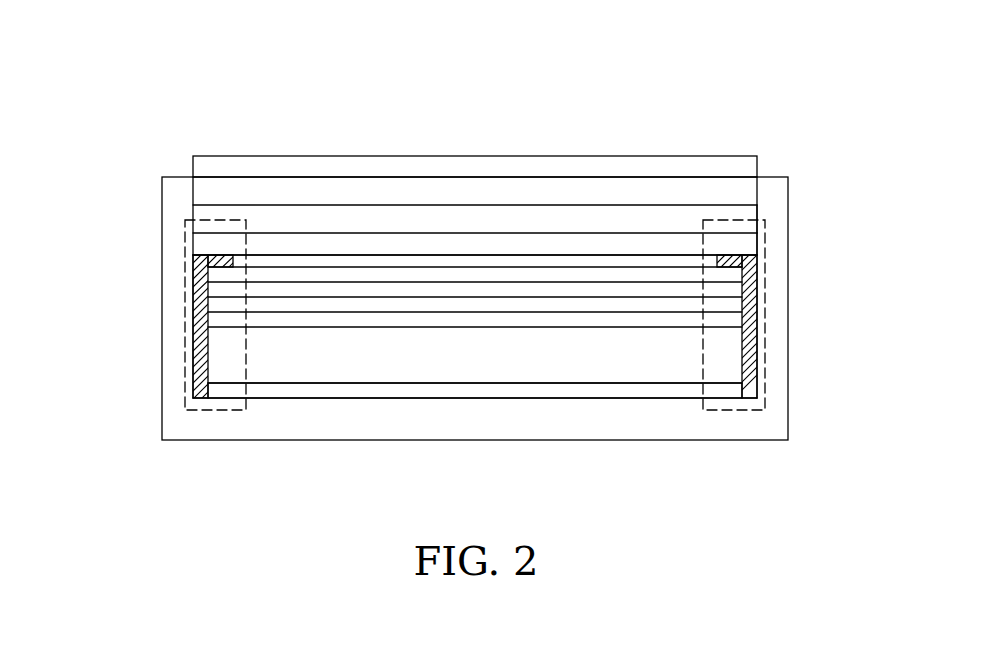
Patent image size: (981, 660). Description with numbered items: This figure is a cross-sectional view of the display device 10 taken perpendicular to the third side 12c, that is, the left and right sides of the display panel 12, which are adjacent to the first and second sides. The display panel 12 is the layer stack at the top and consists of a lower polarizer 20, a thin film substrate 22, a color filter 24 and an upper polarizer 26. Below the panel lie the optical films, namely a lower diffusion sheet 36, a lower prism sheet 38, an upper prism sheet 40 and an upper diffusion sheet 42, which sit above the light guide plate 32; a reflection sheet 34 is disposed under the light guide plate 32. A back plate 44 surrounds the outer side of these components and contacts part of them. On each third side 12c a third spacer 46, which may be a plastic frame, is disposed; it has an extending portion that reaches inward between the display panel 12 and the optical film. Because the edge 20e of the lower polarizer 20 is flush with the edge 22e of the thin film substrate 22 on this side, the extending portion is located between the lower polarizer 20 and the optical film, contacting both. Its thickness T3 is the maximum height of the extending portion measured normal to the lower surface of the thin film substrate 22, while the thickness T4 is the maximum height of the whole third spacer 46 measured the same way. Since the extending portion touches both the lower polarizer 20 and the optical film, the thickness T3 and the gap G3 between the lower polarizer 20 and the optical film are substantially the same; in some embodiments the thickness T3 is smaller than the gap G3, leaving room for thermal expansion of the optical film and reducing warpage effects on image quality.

The display device 10 is at (97, 74).
The display panel 12 is at (475, 157).
The third side 12c is at (187, 222).
The lower polarizer 20 is at (523, 103).
The edge of the lower polarizer 20e is at (753, 247).
The thin film substrate 22 is at (400, 218).
The edge of the thin film substrate 22e is at (759, 207).
The color filter 24 is at (451, 188).
The upper polarizer 26 is at (500, 163).
The light guide plate 32 is at (728, 357).
The reflection sheet 34 is at (728, 390).
The lower diffusion sheet 36 is at (482, 322).
The lower prism sheet 38 is at (532, 307).
The upper prism sheet 40 is at (580, 290).
The upper diffusion sheet 42 is at (630, 275).
The back plate 44 is at (773, 425).
The third spacer 46 is at (550, 321).
The thickness of the extending portion T3 is at (220, 308).
The thickness of the third spacer T4 is at (197, 255).
The gap between the lower polarizer and the optical film G3 is at (262, 308).